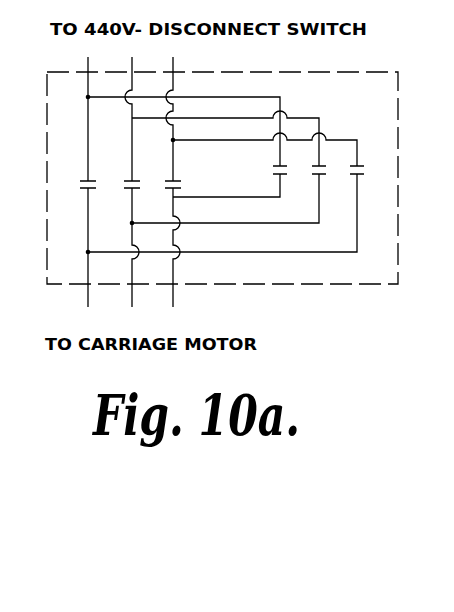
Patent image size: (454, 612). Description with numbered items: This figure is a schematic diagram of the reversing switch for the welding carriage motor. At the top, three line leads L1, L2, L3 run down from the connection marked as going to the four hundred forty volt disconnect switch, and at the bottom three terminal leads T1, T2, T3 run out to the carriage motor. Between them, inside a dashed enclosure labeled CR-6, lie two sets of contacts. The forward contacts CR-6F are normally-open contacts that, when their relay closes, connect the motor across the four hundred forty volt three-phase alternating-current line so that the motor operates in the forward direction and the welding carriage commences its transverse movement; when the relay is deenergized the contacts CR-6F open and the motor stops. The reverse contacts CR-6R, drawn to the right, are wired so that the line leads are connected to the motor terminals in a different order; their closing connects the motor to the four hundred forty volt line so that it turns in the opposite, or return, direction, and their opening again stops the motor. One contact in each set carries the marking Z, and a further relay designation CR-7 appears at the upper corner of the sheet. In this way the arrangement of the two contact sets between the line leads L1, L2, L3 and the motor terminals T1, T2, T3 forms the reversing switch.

The line lead L1 to disconnect switch L1 is at (86, 111).
The line lead L2 to disconnect switch L2 is at (132, 111).
The line lead L3 to disconnect switch L3 is at (174, 111).
The motor terminal lead T1 is at (84, 258).
The motor terminal lead T2 is at (131, 258).
The motor terminal lead T3 is at (170, 258).
The reversing contactor CR-6 is at (222, 191).
The contacts CR-6F is at (167, 171).
The contacts CR-6R is at (335, 161).
The interlock contact Z is at (269, 180).
The contactor CR-7 is at (17, 7).